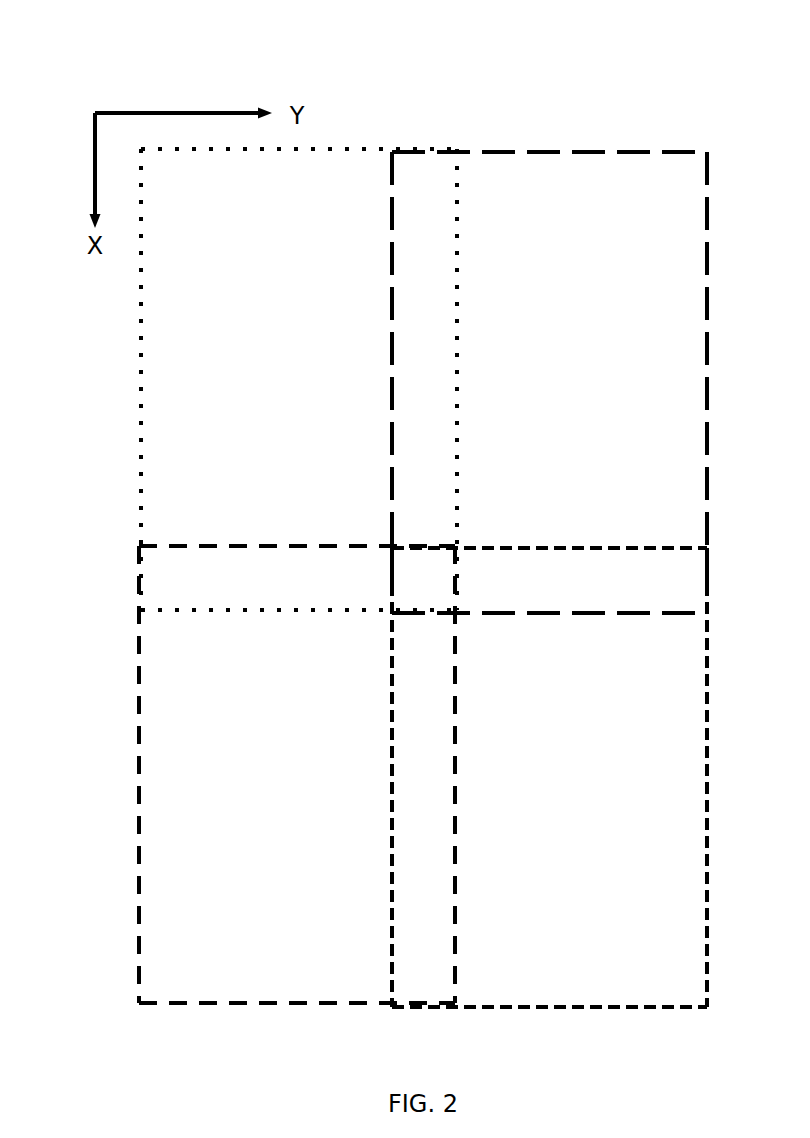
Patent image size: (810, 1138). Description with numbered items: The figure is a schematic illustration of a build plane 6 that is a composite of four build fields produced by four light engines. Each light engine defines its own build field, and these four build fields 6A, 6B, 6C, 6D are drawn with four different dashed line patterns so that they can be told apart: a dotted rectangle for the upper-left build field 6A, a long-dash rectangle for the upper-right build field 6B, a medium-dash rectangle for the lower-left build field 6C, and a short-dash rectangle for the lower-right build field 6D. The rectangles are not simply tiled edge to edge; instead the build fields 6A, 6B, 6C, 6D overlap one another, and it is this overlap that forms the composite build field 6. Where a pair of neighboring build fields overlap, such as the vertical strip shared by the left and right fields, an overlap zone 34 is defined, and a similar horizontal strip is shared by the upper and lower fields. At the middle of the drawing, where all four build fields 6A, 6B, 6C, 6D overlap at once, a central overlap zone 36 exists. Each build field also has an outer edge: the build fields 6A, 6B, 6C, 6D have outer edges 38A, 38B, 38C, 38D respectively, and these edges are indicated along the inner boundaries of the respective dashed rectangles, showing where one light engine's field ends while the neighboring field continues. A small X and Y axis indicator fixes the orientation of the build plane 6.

The build plane 6 is at (670, 70).
The first build field 6A is at (338, 379).
The second build field 6B is at (495, 382).
The third build field 6C is at (343, 774).
The fourth build field 6D is at (499, 777).
The overlap zones 34 is at (412, 175).
The central overlap zone 36 is at (430, 582).
The outer edge of first build field 38A is at (458, 272).
The outer edge of second build field 38B is at (392, 265).
The outer edge of third build field 38C is at (455, 712).
The outer edge of fourth build field 38D is at (390, 690).